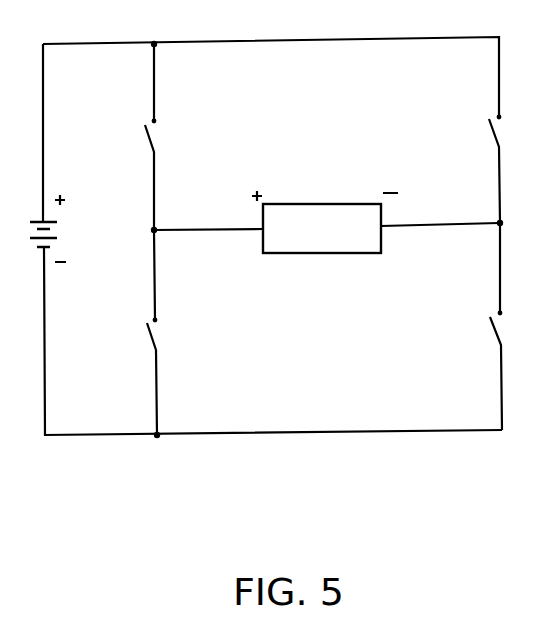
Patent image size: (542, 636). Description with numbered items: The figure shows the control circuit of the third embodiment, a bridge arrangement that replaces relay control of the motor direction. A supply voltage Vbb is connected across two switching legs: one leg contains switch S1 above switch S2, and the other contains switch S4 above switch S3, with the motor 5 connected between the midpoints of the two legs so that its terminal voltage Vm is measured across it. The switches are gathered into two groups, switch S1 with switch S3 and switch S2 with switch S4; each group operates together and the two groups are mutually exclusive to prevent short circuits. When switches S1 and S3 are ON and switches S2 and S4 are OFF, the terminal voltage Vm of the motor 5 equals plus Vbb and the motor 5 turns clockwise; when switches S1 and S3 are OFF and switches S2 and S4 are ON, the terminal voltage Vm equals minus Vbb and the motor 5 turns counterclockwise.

The motor 5 is at (348, 213).
The switch S1 is at (168, 174).
The switch S2 is at (170, 290).
The switch S3 is at (477, 326).
The switch S4 is at (476, 169).
The supply voltage Vbb is at (70, 228).
The terminal voltage of the motor Vm is at (326, 186).